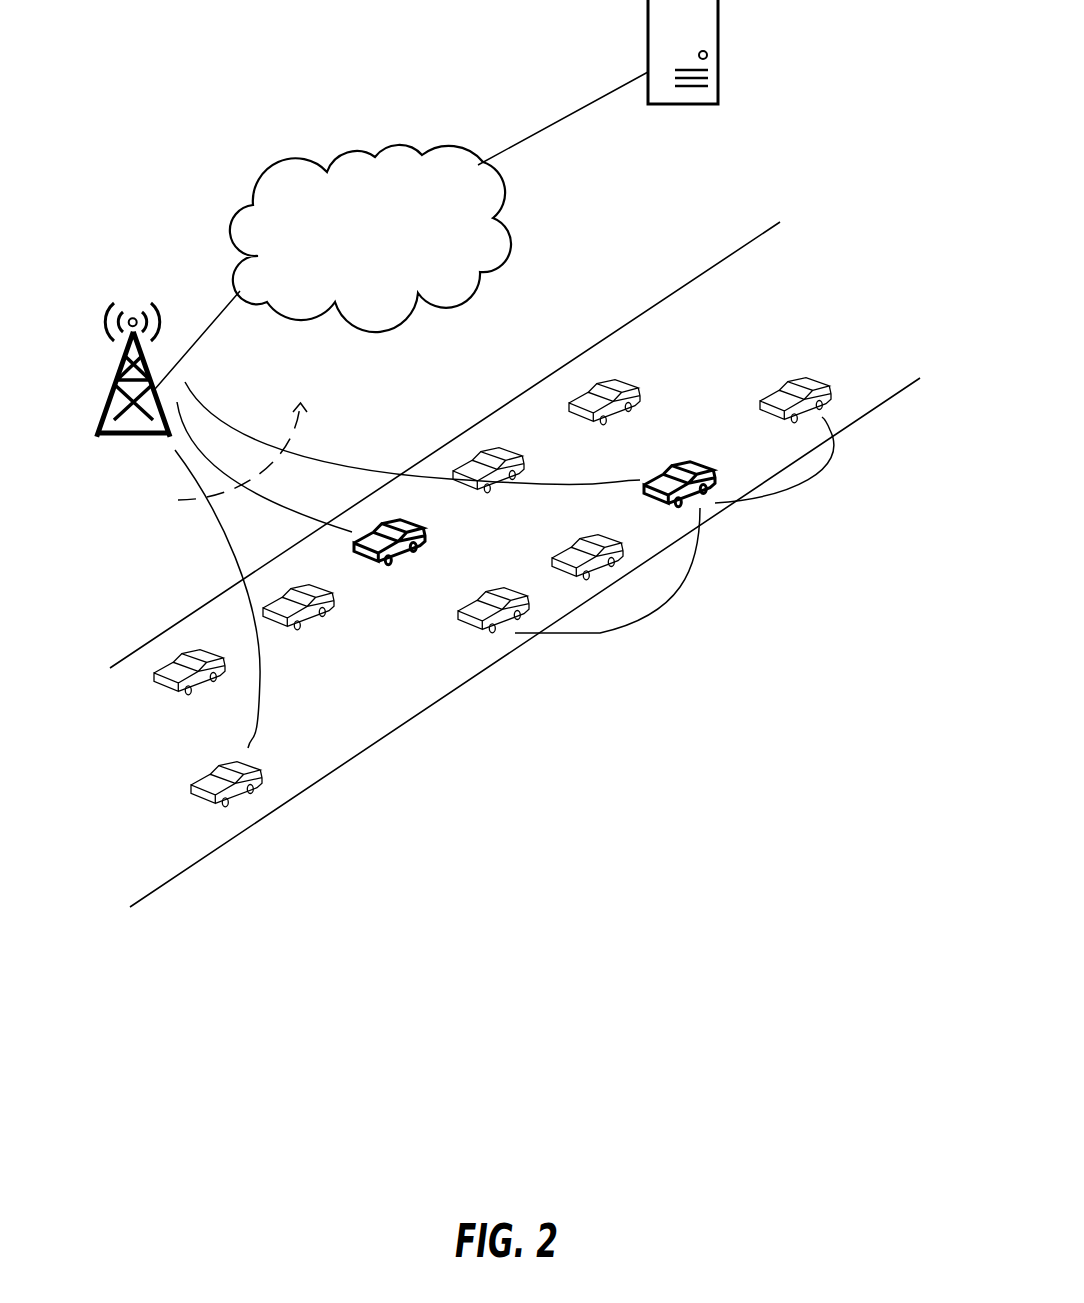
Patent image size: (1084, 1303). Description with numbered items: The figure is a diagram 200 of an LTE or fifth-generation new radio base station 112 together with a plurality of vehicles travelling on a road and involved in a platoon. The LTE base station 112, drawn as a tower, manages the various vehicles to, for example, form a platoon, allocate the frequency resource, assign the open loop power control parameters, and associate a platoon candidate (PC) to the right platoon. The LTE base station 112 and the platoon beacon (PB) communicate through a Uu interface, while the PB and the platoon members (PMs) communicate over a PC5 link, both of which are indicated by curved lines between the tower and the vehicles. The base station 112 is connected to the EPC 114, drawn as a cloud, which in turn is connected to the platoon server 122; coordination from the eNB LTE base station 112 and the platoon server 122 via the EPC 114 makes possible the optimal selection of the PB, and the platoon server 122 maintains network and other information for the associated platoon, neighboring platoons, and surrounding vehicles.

The diagram 200 is at (198, 26).
The LTE base station 112 is at (150, 518).
The EPC 114 is at (386, 262).
The platoon server 122 is at (697, 198).